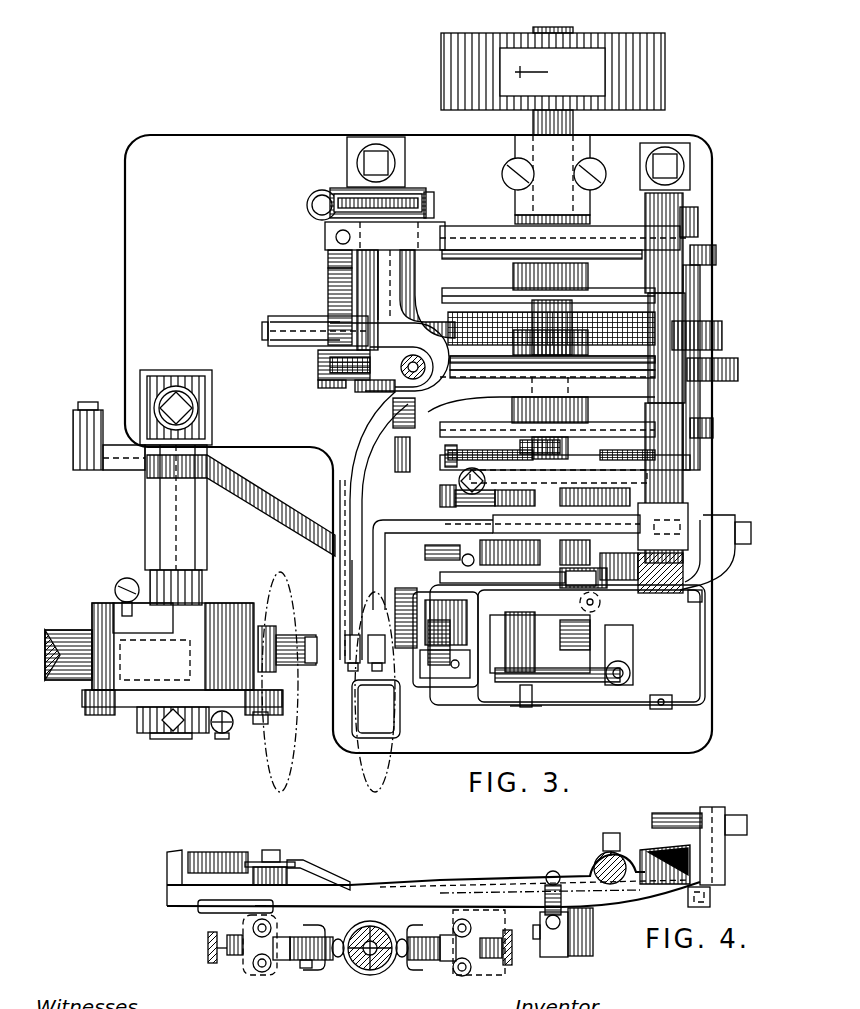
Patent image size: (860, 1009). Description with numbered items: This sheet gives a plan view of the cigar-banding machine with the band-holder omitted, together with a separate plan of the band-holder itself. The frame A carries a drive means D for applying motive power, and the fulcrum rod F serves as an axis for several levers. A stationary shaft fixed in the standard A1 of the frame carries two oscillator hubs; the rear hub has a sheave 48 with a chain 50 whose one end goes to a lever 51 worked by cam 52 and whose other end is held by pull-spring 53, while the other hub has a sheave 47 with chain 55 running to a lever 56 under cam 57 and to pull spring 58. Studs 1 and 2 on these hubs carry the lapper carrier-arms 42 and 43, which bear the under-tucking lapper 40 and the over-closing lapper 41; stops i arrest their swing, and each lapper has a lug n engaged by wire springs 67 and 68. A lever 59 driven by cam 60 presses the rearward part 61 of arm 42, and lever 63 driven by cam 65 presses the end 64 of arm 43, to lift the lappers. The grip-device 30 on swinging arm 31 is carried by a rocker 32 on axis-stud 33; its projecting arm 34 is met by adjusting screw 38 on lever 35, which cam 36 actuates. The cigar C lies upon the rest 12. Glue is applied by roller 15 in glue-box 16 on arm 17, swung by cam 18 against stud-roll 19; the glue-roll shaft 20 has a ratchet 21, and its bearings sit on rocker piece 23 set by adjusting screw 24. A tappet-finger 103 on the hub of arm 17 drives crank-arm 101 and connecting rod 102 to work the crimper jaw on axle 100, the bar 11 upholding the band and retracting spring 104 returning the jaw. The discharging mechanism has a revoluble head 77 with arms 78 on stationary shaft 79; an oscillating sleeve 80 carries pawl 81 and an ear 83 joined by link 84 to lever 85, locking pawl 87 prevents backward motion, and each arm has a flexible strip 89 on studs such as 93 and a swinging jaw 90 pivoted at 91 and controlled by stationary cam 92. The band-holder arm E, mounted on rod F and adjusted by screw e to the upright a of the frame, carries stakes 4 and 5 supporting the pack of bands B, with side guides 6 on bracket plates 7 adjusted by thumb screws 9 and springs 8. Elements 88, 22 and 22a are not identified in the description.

In FIG. 3, the drive means D is at (553, 81).
In FIG. 3, the standard of the frame A1 is at (356, 148).
In FIG. 3, the pull-spring 53 is at (318, 194).
In FIG. 3, the wheel or sheave portion 48 is at (412, 192).
In FIG. 3, the chain 50 is at (434, 204).
In FIG. 3, the lever 59 is at (726, 228).
In FIG. 3, the stops i is at (328, 262).
In FIG. 3, the rearwardly extended part of lapper-carrier arm 61 is at (330, 284).
In FIG. 3, the lever 51 is at (432, 322).
In FIG. 3, the cam 60 is at (542, 267).
In FIG. 3, the cam 52 is at (586, 302).
In FIG. 3, the lever 63 is at (722, 334).
In FIG. 3, the stud 1 is at (262, 332).
In FIG. 3, the pull spring 58 is at (492, 357).
In FIG. 3, the chain 55 is at (318, 370).
In FIG. 3, the lever 56 is at (322, 383).
In FIG. 3, the wheel or sheave 47 is at (360, 386).
In FIG. 3, the cam 65 is at (570, 372).
In FIG. 3, the cam 36 is at (500, 430).
In FIG. 3, the backwardly extended end of lapper-carrier arm 64 is at (409, 423).
In FIG. 3, the stud 2 is at (457, 460).
In FIG. 3, the adjusting screw 38 is at (485, 481).
In FIG. 3, the swinging lever 35 is at (690, 461).
In FIG. 3, the axis-stud 33 is at (570, 464).
In FIG. 3, the projecting arm 34 is at (475, 500).
In FIG. 3, the cam 57 is at (445, 503).
In FIG. 3, the upright part of the frame a is at (672, 520).
In FIG. 3, the screw or bolt e is at (748, 534).
In FIG. 4, the screw or bolt e is at (683, 814).
In FIG. 3, the bar or arm E is at (690, 572).
In FIG. 4, the bar or arm E is at (412, 898).
In FIG. 3, the tappet-finger 103 is at (706, 600).
In FIG. 3, the rocker 32 is at (542, 526).
In FIG. 3, the swinging arm 31 is at (433, 562).
In FIG. 3, the carrier-arm 42 is at (355, 494).
In FIG. 3, the carrier-arm 43 is at (400, 507).
In FIG. 3, the lever 85 is at (250, 650).
In FIG. 3, the oscillating sleeve 80 is at (160, 524).
In FIG. 3, the link 84 is at (80, 432).
In FIG. 3, the second ear 83 is at (100, 456).
In FIG. 3, the pawl 81 is at (122, 600).
In FIG. 3, the revoluble head 77 is at (213, 618).
In FIG. 3, the arms 78 is at (72, 630).
In FIG. 3, the stud 93 is at (300, 633).
In FIG. 3, the flexible strip or loop 89 is at (296, 639).
In FIG. 3, the swinging jaw 90 is at (80, 700).
In FIG. 3, the stationary shaft 79 is at (176, 735).
In FIG. 3, the stationary cam 92 is at (155, 725).
In FIG. 3, the pivot 91 is at (268, 708).
In FIG. 3, the locking pawl 87 is at (221, 735).
In FIG. 3, the washer 88 is at (230, 730).
In FIG. 3, the cigar C is at (328, 682).
In FIG. 3, the outstanding lug n is at (352, 648).
In FIG. 3, the wire spring 67 is at (348, 578).
In FIG. 3, the lapper 40 is at (346, 658).
In FIG. 3, the lapper 41 is at (385, 670).
In FIG. 3, the grip-device 30 is at (352, 690).
In FIG. 3, the rest 12 is at (376, 709).
In FIG. 3, the wire spring 68 is at (432, 569).
In FIG. 3, the cam 18 is at (502, 572).
In FIG. 3, the stud-roll 19 is at (583, 589).
In FIG. 3, the arm 17 is at (512, 626).
In FIG. 3, the glue-box 16 is at (445, 639).
In FIG. 3, the glue-applying roller 15 is at (436, 660).
In FIG. 3, the glue-roll shaft 20 is at (540, 642).
In FIG. 3, the ratchet 21 is at (560, 682).
In FIG. 3, the rocker piece 23 is at (592, 684).
In FIG. 3, the adjusting screw 24 is at (525, 710).
In FIG. 3, the fulcrum-rod F is at (661, 715).
In FIG. 3, the frame A is at (567, 666).
In FIG. 4, the retracting spring 104 is at (216, 854).
In FIG. 4, the crank-arm 101 is at (268, 868).
In FIG. 4, the axle 100 is at (278, 850).
In FIG. 4, the connecting rod 102 is at (320, 858).
In FIG. 4, the bracket plates 7 is at (262, 972).
In FIG. 4, the thumb screws 9 is at (208, 950).
In FIG. 4, the springs 8 is at (228, 960).
In FIG. 4, the end-guiding stake 4 is at (303, 948).
In FIG. 4, the stationary bar 11 is at (306, 970).
In FIG. 4, the side-guiding devices 6 is at (363, 951).
In FIG. 4, the pack of bands B is at (370, 976).
In FIG. 4, the end-guiding stake 5 is at (446, 935).
In FIG. 4, the spring 22a is at (548, 876).
In FIG. 4, the block 22 is at (553, 958).